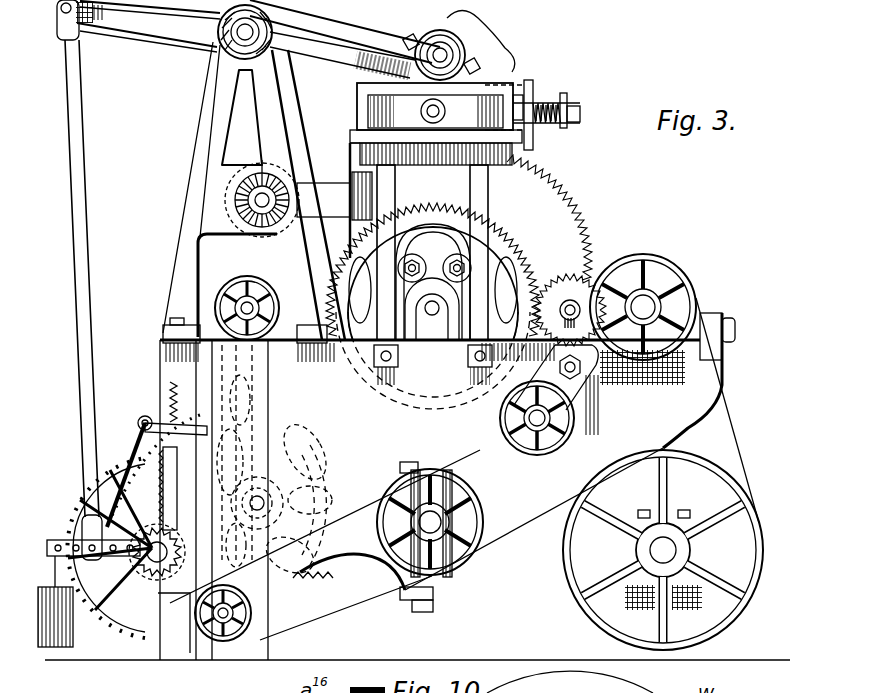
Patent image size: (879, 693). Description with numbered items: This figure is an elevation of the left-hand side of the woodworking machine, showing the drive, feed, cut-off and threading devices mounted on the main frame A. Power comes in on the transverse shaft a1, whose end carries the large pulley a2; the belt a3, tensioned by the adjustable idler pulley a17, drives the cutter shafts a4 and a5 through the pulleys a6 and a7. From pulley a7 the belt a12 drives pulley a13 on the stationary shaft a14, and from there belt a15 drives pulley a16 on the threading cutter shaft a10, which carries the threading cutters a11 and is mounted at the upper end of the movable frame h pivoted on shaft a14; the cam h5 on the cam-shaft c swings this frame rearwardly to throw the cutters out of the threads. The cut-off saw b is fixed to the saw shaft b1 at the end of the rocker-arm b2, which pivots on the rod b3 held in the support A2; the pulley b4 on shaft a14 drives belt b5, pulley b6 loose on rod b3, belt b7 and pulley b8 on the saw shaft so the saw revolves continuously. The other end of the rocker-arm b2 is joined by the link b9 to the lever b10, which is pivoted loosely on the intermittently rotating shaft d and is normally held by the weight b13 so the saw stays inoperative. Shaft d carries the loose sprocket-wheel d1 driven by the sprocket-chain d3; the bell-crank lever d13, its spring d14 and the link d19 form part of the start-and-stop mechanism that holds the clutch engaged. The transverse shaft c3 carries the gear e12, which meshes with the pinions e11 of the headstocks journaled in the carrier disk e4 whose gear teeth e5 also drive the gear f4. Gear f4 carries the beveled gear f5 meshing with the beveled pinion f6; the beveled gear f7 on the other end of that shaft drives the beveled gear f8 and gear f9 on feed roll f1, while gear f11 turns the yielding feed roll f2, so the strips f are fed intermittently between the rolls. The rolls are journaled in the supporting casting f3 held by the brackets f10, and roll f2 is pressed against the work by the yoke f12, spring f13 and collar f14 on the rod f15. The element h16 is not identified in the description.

The rocker-arm b2 is at (163, 27).
The rod b3 is at (240, 38).
The pulley b6 is at (216, 46).
The saw shaft b1 is at (442, 57).
The pulley b8 is at (472, 30).
The strips of work f is at (430, 36).
The cut-off saw b is at (505, 68).
The feed roll f1 is at (380, 110).
The yielding feed roll f2 is at (503, 97).
The gear f11 is at (522, 153).
The gear f9 is at (362, 150).
The supporting casting f3 is at (363, 113).
The beveled gear f8 is at (490, 196).
The brackets f10 is at (480, 218).
The yoke f12 is at (535, 103).
The spring f13 is at (568, 97).
The rod f15 is at (573, 110).
The collar f14 is at (576, 124).
The gear f4 is at (232, 197).
The beveled pinion f6 is at (296, 223).
The beveled gear f5 is at (246, 133).
The beveled gear f7 is at (362, 190).
The support A2 is at (222, 100).
The belt b7 is at (312, 78).
The belt b5 is at (203, 176).
The link b9 is at (80, 256).
The threading cutter shaft a10 is at (217, 302).
The pulley a16 is at (212, 297).
The threading cutters a11 is at (236, 272).
The belt a15 is at (330, 364).
The shaft c3 is at (428, 316).
The gear e12 is at (512, 257).
The gear teeth e5 is at (547, 193).
The disk e4 is at (560, 230).
The pinions e11 is at (554, 290).
The pulley a6 is at (698, 302).
The cutter shaft a4 is at (655, 305).
The adjustable idler pulley a17 is at (502, 432).
The cutter shaft a5 is at (438, 523).
The pulley a7 is at (466, 532).
The transverse shaft a1 is at (672, 546).
The large pulley a2 is at (763, 557).
The belt a3 is at (503, 616).
The main frame A is at (511, 451).
The sprocket-wheel d1 is at (153, 585).
The intermittently rotating shaft d is at (123, 660).
The sprocket-chain d3 is at (140, 650).
The bell-crank lever d13 is at (182, 422).
The spring d14 is at (170, 387).
The link d19 is at (140, 429).
The lever b10 is at (53, 530).
The weight b13 is at (50, 634).
The movable frame h is at (228, 374).
The cam h5 is at (270, 510).
The cam lobe h16 is at (238, 520).
The cam-shaft c is at (272, 483).
The stationary shaft a14 is at (215, 620).
The pulley b4 is at (262, 645).
The pulley a13 is at (332, 578).
The belt a12 is at (358, 603).